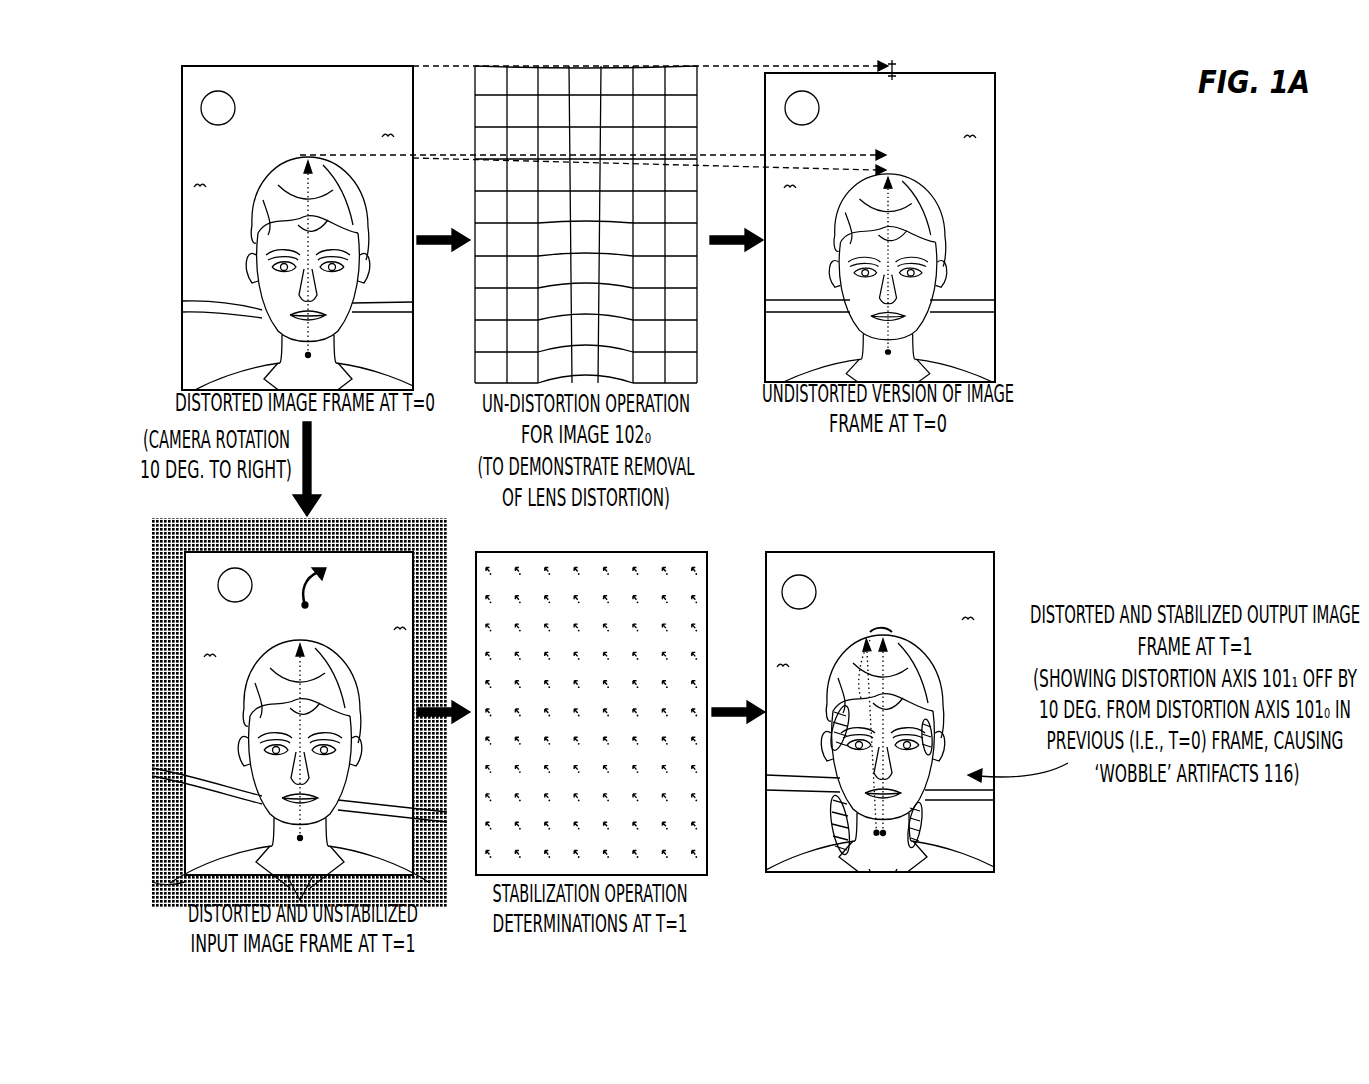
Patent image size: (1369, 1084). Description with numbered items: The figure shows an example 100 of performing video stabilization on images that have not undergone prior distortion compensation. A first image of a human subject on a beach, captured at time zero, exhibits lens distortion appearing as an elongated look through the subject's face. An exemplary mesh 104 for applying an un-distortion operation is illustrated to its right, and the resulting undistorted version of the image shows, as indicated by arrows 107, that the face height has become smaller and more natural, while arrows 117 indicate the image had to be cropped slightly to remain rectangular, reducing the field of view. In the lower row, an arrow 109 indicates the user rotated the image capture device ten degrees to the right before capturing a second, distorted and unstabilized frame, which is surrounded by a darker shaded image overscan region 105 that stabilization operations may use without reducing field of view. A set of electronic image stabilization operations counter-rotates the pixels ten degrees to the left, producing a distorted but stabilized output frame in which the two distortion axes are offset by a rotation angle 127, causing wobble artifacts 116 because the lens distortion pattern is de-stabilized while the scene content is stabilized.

The example of performing video stabilization 100 is at (1118, 294).
The mesh 104 is at (474, 146).
The image overscan region 105 is at (172, 888).
The arrows 107 is at (888, 166).
The arrow 109 is at (319, 593).
The wobble artifacts 116 is at (832, 748).
The arrows 117 is at (893, 72).
The rotation angle 127 is at (877, 630).